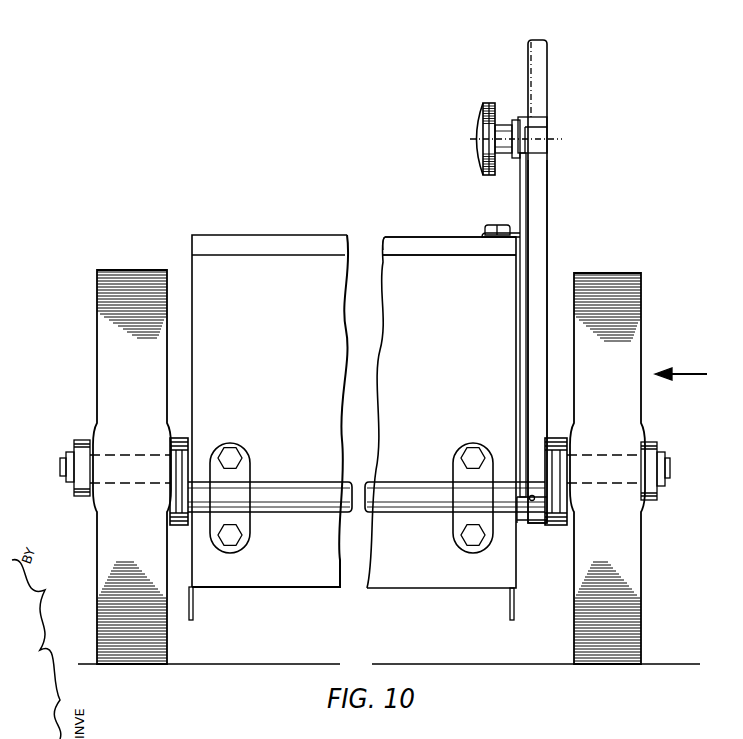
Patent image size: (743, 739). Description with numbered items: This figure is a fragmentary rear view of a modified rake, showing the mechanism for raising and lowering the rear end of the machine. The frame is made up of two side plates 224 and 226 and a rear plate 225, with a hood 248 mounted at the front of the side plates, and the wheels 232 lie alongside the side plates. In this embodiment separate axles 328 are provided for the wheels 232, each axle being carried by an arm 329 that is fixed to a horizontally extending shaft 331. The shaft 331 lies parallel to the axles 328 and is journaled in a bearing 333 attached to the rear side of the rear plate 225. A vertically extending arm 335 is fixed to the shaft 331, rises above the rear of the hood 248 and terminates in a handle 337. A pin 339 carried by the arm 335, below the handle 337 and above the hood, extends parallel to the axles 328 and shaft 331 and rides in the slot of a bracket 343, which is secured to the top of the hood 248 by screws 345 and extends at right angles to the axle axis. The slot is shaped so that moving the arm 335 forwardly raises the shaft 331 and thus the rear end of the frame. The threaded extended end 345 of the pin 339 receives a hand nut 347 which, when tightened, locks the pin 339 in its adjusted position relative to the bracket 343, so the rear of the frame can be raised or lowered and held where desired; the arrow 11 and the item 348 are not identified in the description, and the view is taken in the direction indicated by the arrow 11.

The direction of travel arrow 11 is at (697, 376).
The side plate 224 is at (510, 616).
The rear plate 225 is at (506, 272).
The side plate 226 is at (194, 609).
The wheels 232 is at (105, 368).
The hood 248 is at (400, 248).
The axles 328 is at (72, 462).
The arm 329 is at (180, 527).
The shaft 331 is at (370, 488).
The bearing 333 is at (242, 492).
The vertically extending arm 335 is at (549, 199).
The handle 337 is at (549, 47).
The pin 339 is at (537, 147).
The bracket 343 is at (521, 190).
The screws 345 is at (490, 226).
The hand nut 347 is at (481, 150).
The knob shaft 348 is at (502, 124).